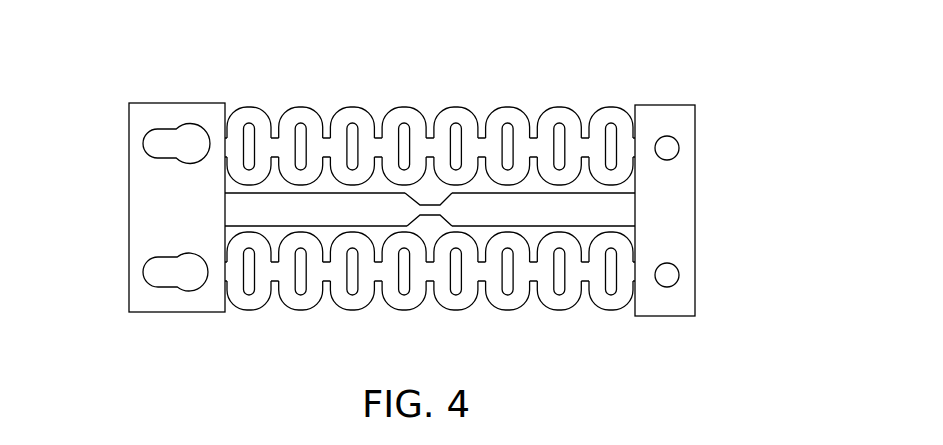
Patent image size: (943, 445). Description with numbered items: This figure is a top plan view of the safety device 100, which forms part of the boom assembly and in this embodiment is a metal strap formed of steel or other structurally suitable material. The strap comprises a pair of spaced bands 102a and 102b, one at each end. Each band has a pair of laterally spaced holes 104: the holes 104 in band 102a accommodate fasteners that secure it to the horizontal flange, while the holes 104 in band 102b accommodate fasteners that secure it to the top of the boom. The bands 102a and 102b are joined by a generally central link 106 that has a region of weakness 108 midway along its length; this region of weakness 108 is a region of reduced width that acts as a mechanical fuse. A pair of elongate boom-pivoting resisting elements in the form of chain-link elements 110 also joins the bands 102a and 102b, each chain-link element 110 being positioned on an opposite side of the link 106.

The safety device 100 is at (672, 87).
The band 102a is at (697, 231).
The band 102b is at (129, 218).
The holes 104 is at (668, 148).
The link 106 is at (589, 212).
The region of weakness 108 is at (430, 205).
The chain-link elements 110 is at (372, 106).